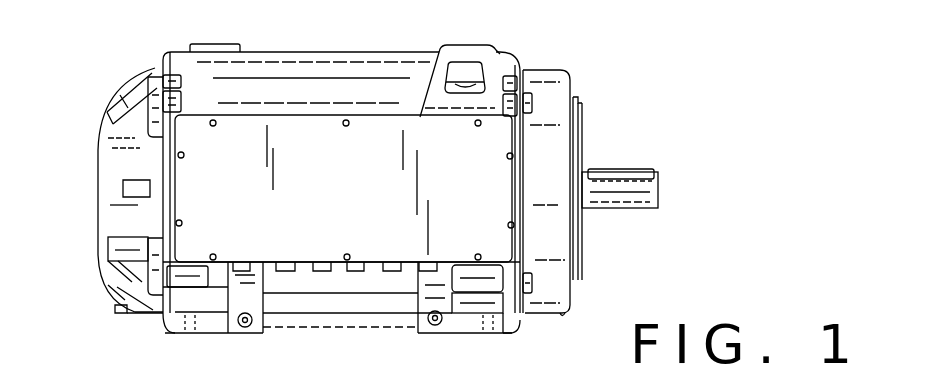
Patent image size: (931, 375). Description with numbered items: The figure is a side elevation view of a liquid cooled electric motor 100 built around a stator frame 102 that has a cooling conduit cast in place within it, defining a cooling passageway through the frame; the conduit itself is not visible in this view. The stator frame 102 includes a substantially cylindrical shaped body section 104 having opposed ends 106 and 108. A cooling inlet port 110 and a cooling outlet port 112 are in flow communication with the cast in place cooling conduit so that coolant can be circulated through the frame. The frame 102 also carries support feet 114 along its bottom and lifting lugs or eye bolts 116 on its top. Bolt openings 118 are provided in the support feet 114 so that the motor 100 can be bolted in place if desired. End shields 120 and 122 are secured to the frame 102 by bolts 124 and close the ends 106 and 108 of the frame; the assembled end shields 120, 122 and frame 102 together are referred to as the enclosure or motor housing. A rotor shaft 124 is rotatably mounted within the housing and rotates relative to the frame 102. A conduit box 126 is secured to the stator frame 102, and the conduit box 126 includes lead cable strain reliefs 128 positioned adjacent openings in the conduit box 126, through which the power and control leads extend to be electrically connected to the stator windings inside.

The liquid cooled electric motor 100 is at (595, 73).
The stator frame 102 is at (345, 78).
The body section 104 is at (267, 93).
The end 106 is at (517, 68).
The end 108 is at (162, 53).
The cooling inlet port 110 is at (432, 324).
The cooling outlet port 112 is at (245, 323).
The support feet 114 is at (215, 327).
The lifting lugs or eye bolts 116 is at (217, 45).
The bolt openings 118 is at (165, 327).
The end shield 120 is at (552, 238).
The end shield 122 is at (120, 202).
The bolts 124 is at (140, 102).
The conduit box 126 is at (350, 180).
The lead cable strain reliefs 128 is at (250, 262).